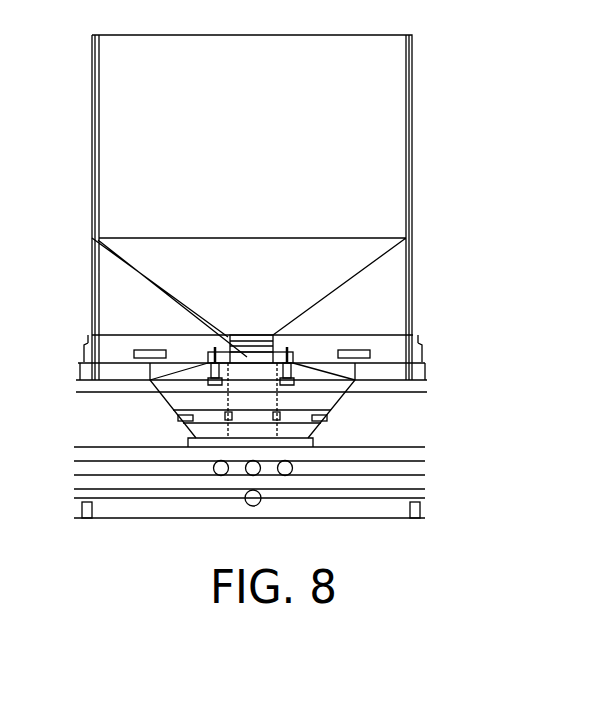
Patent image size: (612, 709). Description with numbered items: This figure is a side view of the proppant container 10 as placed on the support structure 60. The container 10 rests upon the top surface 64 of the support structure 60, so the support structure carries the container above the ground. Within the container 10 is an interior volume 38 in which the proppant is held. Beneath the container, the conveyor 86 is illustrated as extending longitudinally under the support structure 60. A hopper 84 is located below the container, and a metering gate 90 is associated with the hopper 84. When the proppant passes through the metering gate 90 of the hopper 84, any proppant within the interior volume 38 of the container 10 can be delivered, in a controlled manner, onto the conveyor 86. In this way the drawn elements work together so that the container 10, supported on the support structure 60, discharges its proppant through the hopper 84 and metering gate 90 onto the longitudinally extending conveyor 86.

The container 10 is at (431, 138).
The interior volume 38 is at (386, 196).
The top surface 64 is at (425, 358).
The hopper 84 is at (171, 408).
The conveyor 86 is at (95, 468).
The metering gate 90 is at (318, 431).
The support structure 60 is at (450, 434).